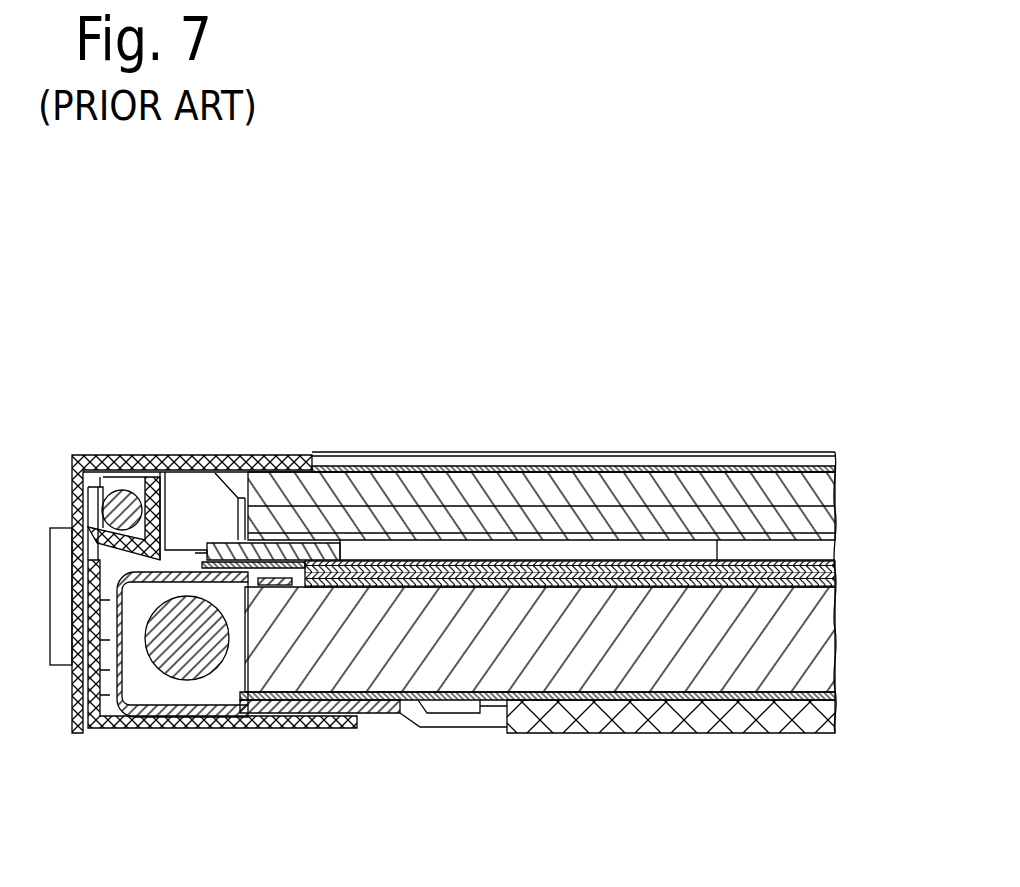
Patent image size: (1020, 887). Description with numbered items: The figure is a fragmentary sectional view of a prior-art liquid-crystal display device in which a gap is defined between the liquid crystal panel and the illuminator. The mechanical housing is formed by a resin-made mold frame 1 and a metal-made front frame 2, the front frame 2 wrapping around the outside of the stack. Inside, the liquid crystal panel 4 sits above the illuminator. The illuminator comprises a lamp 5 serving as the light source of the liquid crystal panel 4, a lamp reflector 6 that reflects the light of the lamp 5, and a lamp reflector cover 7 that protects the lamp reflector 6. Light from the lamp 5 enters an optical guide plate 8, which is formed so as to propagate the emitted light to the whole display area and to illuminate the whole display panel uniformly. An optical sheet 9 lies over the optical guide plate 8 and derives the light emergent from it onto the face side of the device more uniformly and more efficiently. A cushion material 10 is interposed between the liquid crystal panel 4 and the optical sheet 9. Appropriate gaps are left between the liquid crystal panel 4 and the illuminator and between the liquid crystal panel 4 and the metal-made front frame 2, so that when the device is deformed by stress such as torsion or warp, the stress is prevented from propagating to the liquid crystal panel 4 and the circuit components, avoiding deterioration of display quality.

The mold frame 1 is at (830, 715).
The front frame 2 is at (108, 455).
The liquid crystal panel 4 is at (378, 502).
The lamp 5 is at (157, 730).
The lamp reflector 6 is at (282, 730).
The lamp reflector cover 7 is at (200, 730).
The optical guide plate 8 is at (713, 653).
The optical sheet 9 is at (835, 557).
The cushion material 10 is at (250, 530).